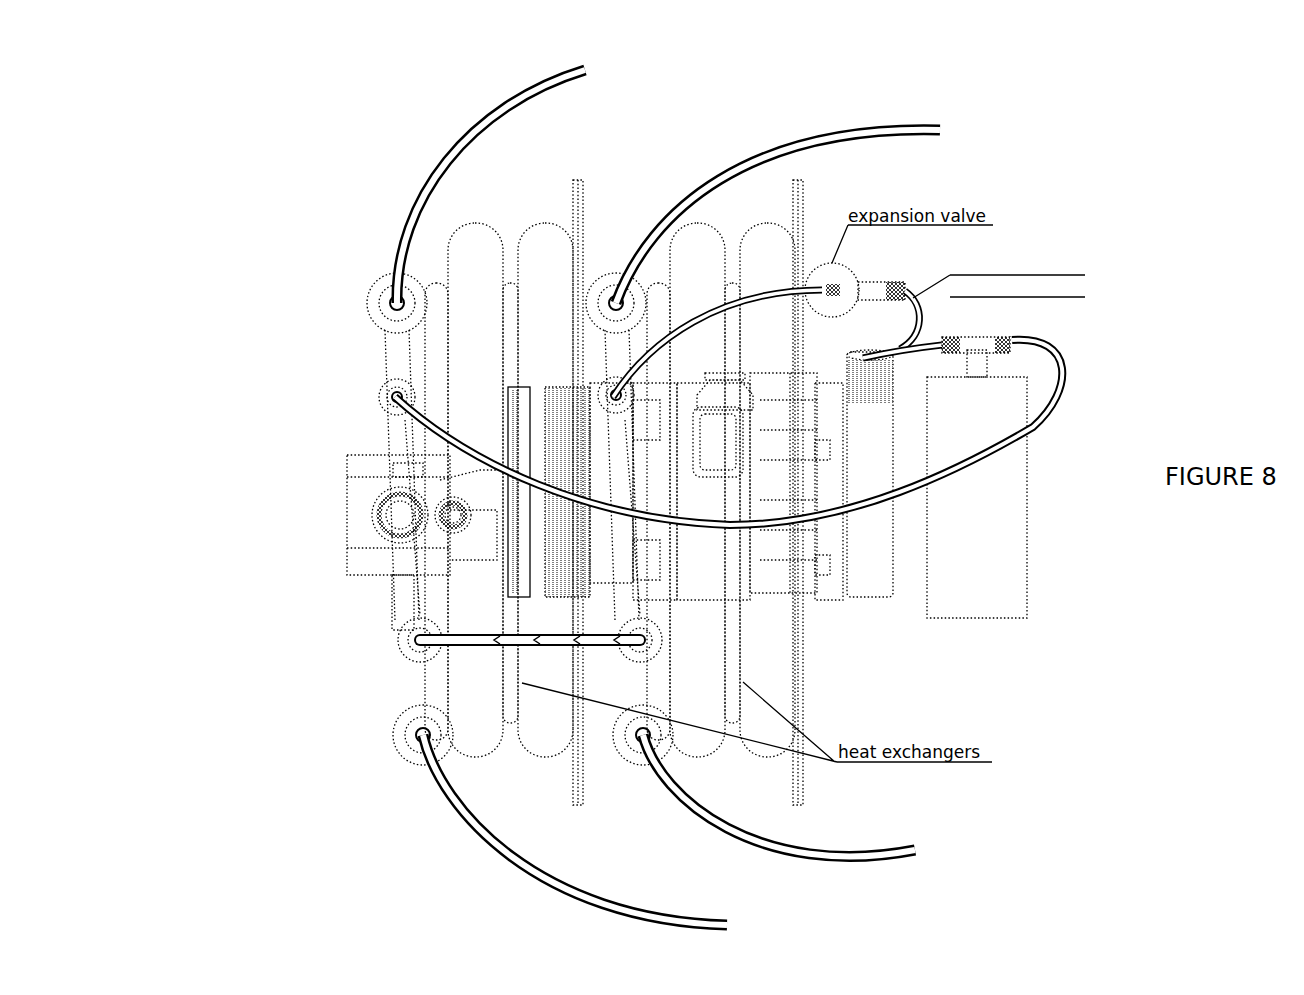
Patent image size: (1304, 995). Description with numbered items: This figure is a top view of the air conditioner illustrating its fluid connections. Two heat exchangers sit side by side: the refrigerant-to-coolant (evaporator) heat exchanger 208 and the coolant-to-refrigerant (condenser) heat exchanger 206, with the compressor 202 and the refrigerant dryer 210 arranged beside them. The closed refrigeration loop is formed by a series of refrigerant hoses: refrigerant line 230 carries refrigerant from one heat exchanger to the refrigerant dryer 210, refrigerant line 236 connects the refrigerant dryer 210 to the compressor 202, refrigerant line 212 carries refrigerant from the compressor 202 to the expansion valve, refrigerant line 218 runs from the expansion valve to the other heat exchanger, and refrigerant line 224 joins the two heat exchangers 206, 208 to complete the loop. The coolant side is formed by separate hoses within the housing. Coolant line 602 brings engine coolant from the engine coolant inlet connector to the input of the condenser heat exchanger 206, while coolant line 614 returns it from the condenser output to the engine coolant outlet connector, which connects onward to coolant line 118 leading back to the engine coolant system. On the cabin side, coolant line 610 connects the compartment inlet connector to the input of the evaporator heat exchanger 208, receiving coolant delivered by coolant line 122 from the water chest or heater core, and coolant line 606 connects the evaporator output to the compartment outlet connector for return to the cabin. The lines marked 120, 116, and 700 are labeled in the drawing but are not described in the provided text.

The coolant line 122 is at (497, 173).
The coolant line 610 is at (421, 168).
The water hose to cabin 120 is at (825, 210).
The coolant line 606 is at (720, 185).
The refrigerant line 218 is at (752, 297).
The refrigerant line 212 is at (905, 322).
The refrigerant line 236 is at (920, 348).
The refrigerant line 230 is at (1032, 424).
The hydraulic motor 700 is at (346, 463).
The refrigerant line 224 is at (475, 638).
The refrigerant-to-coolant (evaporator) heat exchanger 208 is at (504, 716).
The coolant-to-refrigerant (condenser) heat exchanger 206 is at (728, 716).
The refrigerant dryer 210 is at (1002, 647).
The compressor 202 is at (968, 683).
The coolant line 118 is at (598, 839).
The coolant line 614 is at (478, 835).
The water hose in from engine 116 is at (818, 811).
The coolant line 602 is at (713, 832).